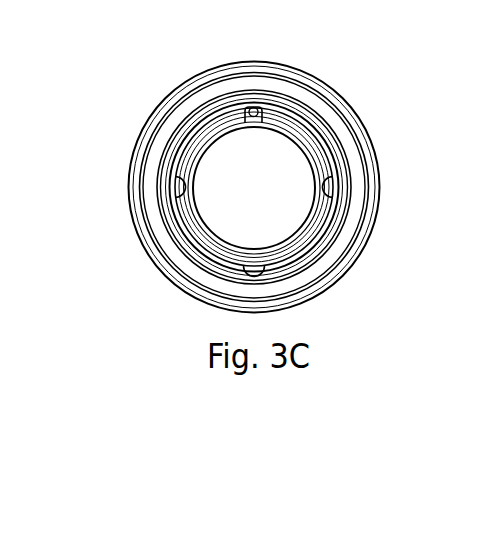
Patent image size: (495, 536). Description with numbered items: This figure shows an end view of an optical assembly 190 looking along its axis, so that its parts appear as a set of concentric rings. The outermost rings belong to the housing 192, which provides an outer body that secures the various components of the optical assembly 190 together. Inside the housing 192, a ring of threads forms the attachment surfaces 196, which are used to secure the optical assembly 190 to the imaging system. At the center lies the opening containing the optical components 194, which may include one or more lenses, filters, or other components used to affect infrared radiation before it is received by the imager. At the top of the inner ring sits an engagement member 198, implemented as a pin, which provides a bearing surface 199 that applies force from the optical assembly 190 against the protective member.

The optical assembly 190 is at (146, 40).
The housing 192 is at (364, 130).
The optical components 194 is at (267, 205).
The attachment surfaces 196 is at (337, 114).
The engagement member 198 is at (253, 108).
The bearing surface 199 is at (232, 118).